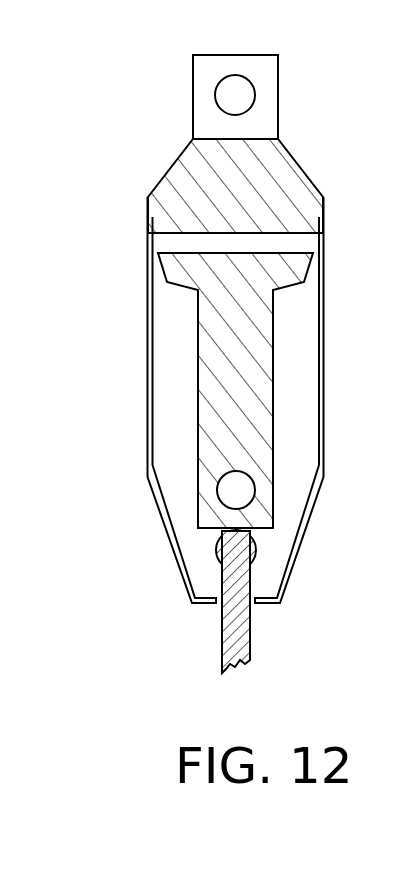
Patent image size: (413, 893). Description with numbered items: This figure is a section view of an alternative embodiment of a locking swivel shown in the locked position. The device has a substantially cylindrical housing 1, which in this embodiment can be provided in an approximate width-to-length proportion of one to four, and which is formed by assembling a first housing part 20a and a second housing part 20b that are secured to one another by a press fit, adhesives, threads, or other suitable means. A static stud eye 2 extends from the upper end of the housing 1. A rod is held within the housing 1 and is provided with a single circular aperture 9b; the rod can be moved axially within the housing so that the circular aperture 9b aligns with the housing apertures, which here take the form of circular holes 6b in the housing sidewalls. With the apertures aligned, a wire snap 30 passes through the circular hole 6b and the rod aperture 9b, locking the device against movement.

The housing 1 is at (348, 259).
The eye 2 is at (198, 85).
The circular aperture 9b is at (237, 485).
The first housing part 20a is at (148, 411).
The second housing part 20b is at (171, 542).
The circular hole 6b is at (255, 547).
The wire snap 30 is at (254, 638).